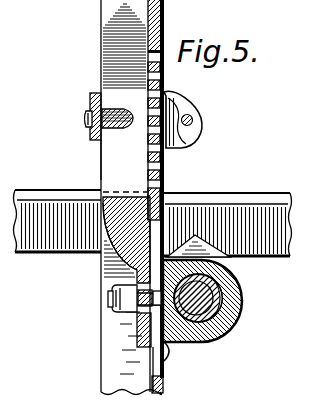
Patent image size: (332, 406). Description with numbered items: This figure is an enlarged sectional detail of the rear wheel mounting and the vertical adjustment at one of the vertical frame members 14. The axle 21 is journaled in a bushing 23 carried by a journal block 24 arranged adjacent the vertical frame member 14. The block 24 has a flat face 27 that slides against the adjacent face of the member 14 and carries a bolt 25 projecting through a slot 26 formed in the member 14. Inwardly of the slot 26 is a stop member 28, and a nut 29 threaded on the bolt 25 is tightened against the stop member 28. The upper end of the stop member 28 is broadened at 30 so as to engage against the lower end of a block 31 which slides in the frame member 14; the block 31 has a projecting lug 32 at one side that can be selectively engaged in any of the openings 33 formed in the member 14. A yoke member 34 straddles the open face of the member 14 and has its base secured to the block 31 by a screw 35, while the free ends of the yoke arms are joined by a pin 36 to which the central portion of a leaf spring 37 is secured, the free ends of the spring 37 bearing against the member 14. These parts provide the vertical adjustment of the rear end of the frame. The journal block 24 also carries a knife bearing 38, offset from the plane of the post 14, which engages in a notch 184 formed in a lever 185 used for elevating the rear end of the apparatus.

The vertical frame member 14 is at (100, 24).
The yoke member 34 is at (90, 93).
The screw 35 is at (85, 115).
The projecting lug 32 is at (153, 121).
The openings 33 is at (164, 163).
The block 31 is at (105, 158).
The broadened upper end 30 is at (99, 208).
The lever 185 is at (52, 181).
The notch 184 is at (197, 240).
The knife bearing 38 is at (220, 258).
The axle 21 is at (239, 320).
The bushing 23 is at (228, 292).
The journal block 24 is at (221, 340).
The nut 29 is at (122, 282).
The bolt 25 is at (108, 302).
The stop member 28 is at (140, 332).
The flat face 27 is at (171, 357).
The slot 26 is at (168, 372).
The pin 36 is at (204, 130).
The leaf spring 37 is at (183, 108).